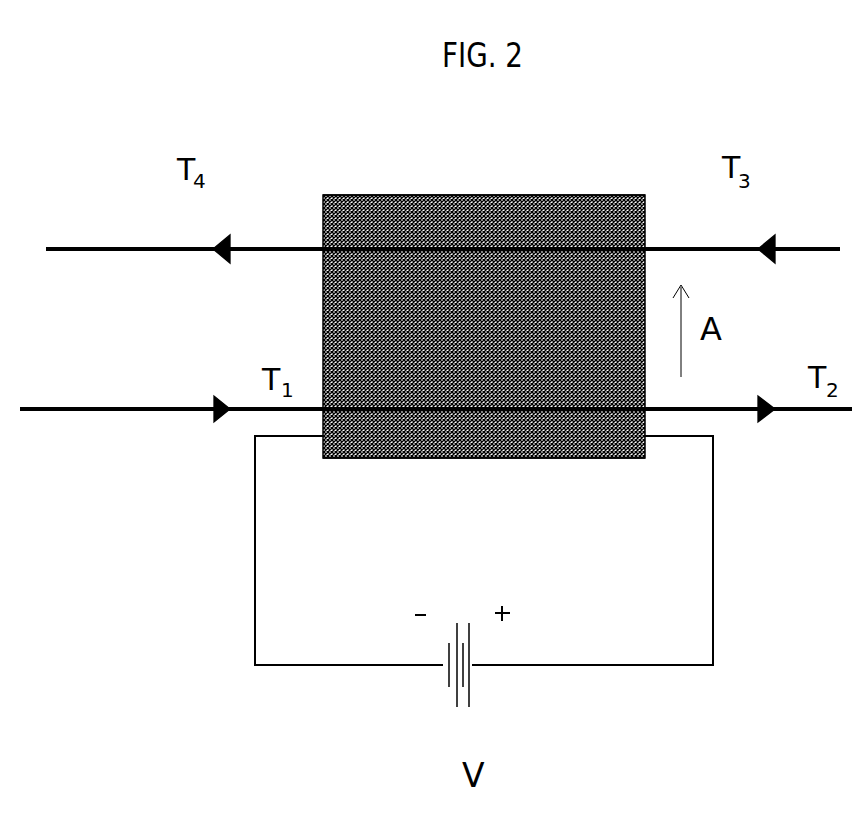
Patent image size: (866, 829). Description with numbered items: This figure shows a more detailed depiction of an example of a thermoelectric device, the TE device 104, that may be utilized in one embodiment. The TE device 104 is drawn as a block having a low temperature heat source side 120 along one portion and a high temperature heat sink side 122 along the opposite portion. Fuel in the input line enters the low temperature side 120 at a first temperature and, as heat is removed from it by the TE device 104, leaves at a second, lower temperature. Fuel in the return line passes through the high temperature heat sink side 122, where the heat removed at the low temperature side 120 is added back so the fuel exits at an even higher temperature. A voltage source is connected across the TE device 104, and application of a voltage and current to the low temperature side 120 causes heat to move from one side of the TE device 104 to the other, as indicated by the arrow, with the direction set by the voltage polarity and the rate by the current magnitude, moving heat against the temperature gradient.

The TE device 104 is at (498, 347).
The low temperature heat source side 120 is at (485, 432).
The high temperature heat sink side 122 is at (491, 227).